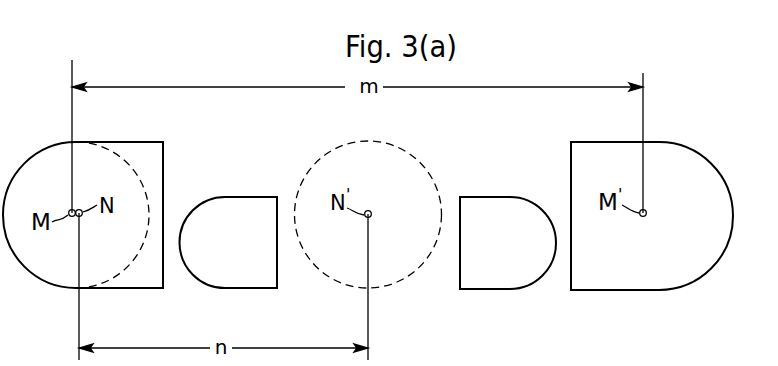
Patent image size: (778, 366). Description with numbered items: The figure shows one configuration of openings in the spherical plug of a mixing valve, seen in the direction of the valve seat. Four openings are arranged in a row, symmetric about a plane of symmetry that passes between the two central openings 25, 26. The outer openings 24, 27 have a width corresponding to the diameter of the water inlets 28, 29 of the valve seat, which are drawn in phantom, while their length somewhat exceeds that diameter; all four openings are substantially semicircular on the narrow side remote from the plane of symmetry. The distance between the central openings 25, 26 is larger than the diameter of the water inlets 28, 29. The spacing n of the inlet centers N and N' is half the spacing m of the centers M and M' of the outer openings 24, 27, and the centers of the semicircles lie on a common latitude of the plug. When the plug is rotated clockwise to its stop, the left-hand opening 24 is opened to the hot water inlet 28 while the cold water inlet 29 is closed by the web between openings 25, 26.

The outer opening 24 is at (147, 275).
The central opening 25 is at (247, 275).
The central opening 26 is at (503, 275).
The outer opening 27 is at (640, 272).
The water inlet 28 is at (133, 185).
The water inlet 29 is at (402, 185).